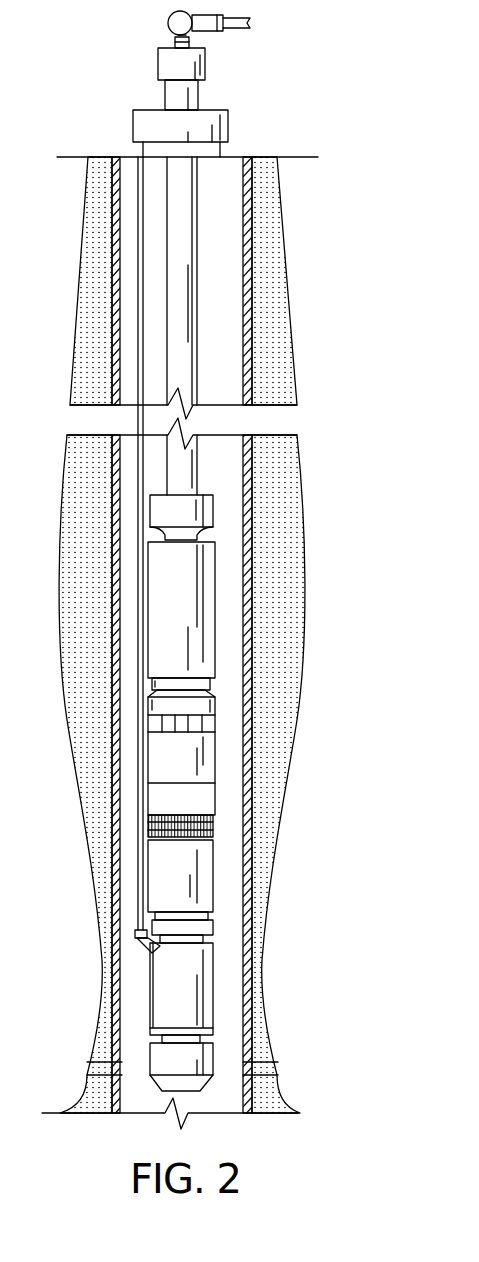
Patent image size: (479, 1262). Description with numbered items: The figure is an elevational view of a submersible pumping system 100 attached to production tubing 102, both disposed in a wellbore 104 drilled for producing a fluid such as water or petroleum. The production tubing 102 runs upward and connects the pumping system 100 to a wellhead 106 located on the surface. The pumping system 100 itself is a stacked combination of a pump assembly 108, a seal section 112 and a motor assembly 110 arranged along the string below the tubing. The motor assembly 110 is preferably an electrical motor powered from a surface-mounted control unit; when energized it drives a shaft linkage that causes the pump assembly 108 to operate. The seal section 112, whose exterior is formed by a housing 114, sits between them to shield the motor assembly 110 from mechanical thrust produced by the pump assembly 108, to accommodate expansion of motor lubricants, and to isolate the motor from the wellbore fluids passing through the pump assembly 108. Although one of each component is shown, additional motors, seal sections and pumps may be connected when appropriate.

The pumping system 100 is at (256, 793).
The production tubing 102 is at (193, 196).
The wellbore 104 is at (245, 256).
The wellhead 106 is at (172, 65).
The pump assembly 108 is at (210, 650).
The motor assembly 110 is at (215, 997).
The seal section 112 is at (215, 855).
The housing 114 is at (215, 768).